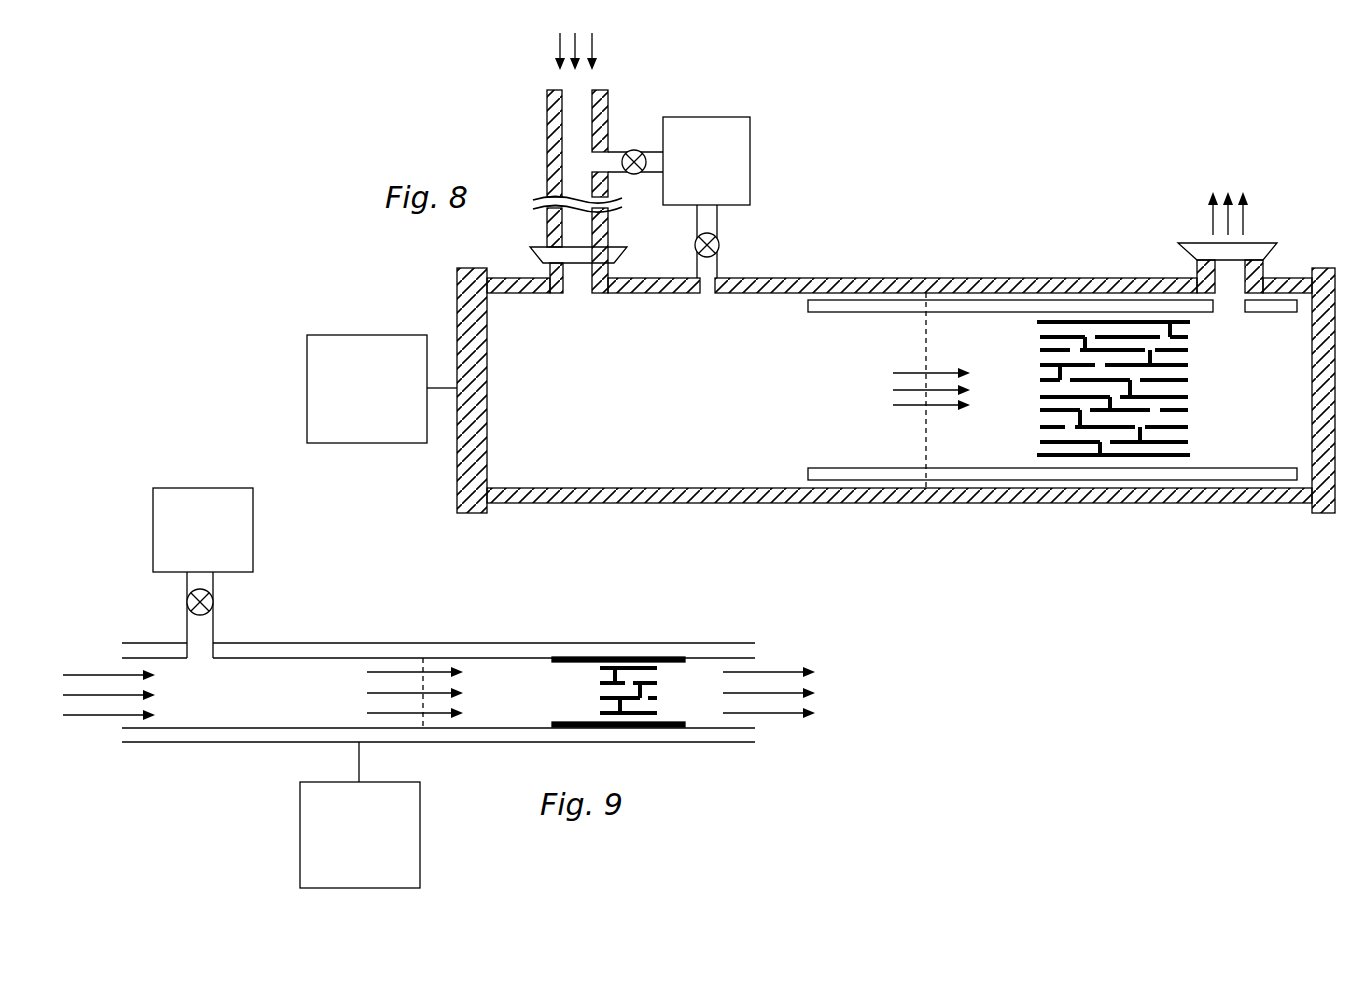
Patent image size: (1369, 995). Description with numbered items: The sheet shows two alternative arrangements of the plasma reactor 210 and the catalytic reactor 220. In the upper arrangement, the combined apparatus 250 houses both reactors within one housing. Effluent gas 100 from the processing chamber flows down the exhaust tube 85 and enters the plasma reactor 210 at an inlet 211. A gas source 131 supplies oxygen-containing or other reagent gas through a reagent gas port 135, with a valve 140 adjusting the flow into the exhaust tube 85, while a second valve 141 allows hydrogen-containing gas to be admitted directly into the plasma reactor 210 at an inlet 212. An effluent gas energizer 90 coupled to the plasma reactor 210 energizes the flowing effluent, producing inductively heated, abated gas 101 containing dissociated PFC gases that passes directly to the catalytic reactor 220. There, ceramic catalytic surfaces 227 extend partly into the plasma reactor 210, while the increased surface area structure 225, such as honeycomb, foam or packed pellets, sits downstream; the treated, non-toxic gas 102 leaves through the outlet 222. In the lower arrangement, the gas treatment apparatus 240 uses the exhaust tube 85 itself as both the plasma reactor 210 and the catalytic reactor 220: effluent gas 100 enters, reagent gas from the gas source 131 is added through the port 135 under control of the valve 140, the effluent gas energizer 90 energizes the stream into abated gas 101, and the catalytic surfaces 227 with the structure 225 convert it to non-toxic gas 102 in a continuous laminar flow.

In FIG. 8, the exhaust tube 85 is at (547, 138).
In FIG. 9, the exhaust tube 85 is at (147, 642).
In FIG. 8, the effluent gas energizer 90 is at (362, 333).
In FIG. 9, the effluent gas energizer 90 is at (420, 842).
In FIG. 8, the effluent gas 100 is at (595, 44).
In FIG. 9, the effluent gas 100 is at (80, 697).
In FIG. 8, the abated gas 101 is at (900, 407).
In FIG. 9, the abated gas 101 is at (423, 683).
In FIG. 8, the non-toxic gas 102 is at (1246, 205).
In FIG. 9, the non-toxic gas 102 is at (768, 690).
In FIG. 8, the gas source 131 is at (750, 150).
In FIG. 9, the gas source 131 is at (253, 513).
In FIG. 8, the reagent gas port 135 is at (658, 178).
In FIG. 9, the reagent gas port 135 is at (217, 632).
In FIG. 8, the valve 140 is at (635, 149).
In FIG. 9, the valve 140 is at (218, 607).
In FIG. 8, the valve 141 is at (719, 246).
In FIG. 8, the plasma reactor 210 is at (651, 405).
In FIG. 9, the plasma reactor 210 is at (325, 709).
In FIG. 8, the gas inlet port 211 is at (544, 267).
In FIG. 8, the inlet 212 is at (690, 268).
In FIG. 8, the catalytic reactor 220 is at (1268, 360).
In FIG. 9, the catalytic reactor 220 is at (525, 707).
In FIG. 8, the outlet 222 is at (1269, 268).
In FIG. 8, the increased surface area structure 225 is at (1183, 390).
In FIG. 9, the increased surface area structure 225 is at (658, 693).
In FIG. 8, the catalytic surfaces 227 is at (993, 313).
In FIG. 9, the catalytic surfaces 227 is at (558, 662).
In FIG. 9, the gas treatment apparatus 240 is at (466, 570).
In FIG. 8, the effluent gas treatment apparatus 250 is at (1054, 190).